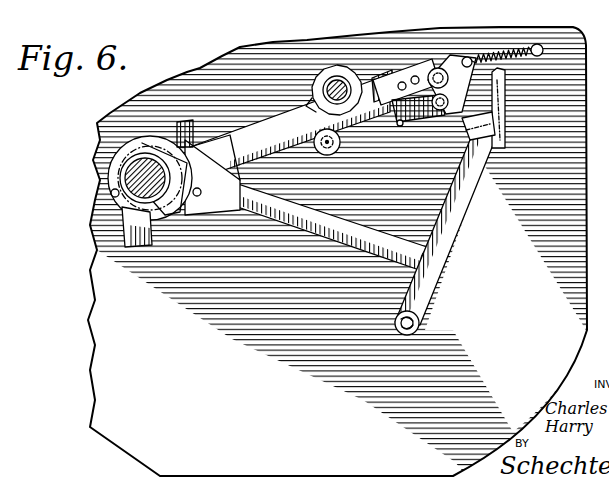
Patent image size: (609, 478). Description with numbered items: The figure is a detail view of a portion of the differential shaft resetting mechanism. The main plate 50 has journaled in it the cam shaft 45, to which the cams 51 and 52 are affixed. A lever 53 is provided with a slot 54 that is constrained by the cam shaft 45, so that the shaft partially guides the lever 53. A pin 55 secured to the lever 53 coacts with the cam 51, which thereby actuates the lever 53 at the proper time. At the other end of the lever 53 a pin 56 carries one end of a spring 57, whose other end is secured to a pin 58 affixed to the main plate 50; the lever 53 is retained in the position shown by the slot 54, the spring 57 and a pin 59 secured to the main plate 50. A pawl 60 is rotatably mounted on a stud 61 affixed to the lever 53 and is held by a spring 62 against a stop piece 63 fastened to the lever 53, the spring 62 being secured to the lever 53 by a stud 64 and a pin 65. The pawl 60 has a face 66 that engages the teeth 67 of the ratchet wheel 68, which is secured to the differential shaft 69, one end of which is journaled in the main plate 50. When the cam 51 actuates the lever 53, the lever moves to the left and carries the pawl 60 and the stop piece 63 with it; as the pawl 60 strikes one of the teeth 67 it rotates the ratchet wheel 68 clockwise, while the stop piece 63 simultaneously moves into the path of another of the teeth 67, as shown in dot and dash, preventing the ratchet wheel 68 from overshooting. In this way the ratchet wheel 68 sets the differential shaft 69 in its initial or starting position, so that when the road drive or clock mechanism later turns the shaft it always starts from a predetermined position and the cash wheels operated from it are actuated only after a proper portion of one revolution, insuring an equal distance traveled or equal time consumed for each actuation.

The cam shaft 45 is at (126, 228).
The main plate 50 is at (578, 242).
The cam 51 is at (182, 127).
The cam 52 is at (112, 160).
The lever 53 is at (259, 132).
The slot 54 is at (200, 150).
The pin 55 is at (113, 197).
The pin 56 is at (470, 57).
The spring 57 is at (506, 47).
The pin 58 is at (542, 45).
The pin 59 is at (333, 153).
The pawl 60 is at (378, 108).
The stud 61 is at (441, 68).
The spring 62 is at (420, 118).
The stop piece 63 is at (403, 72).
The stud 64 is at (444, 111).
The pin 65 is at (401, 124).
The face 66 is at (377, 86).
The teeth 67 is at (312, 104).
The ratchet wheel 68 is at (335, 68).
The differential shaft 69 is at (322, 84).